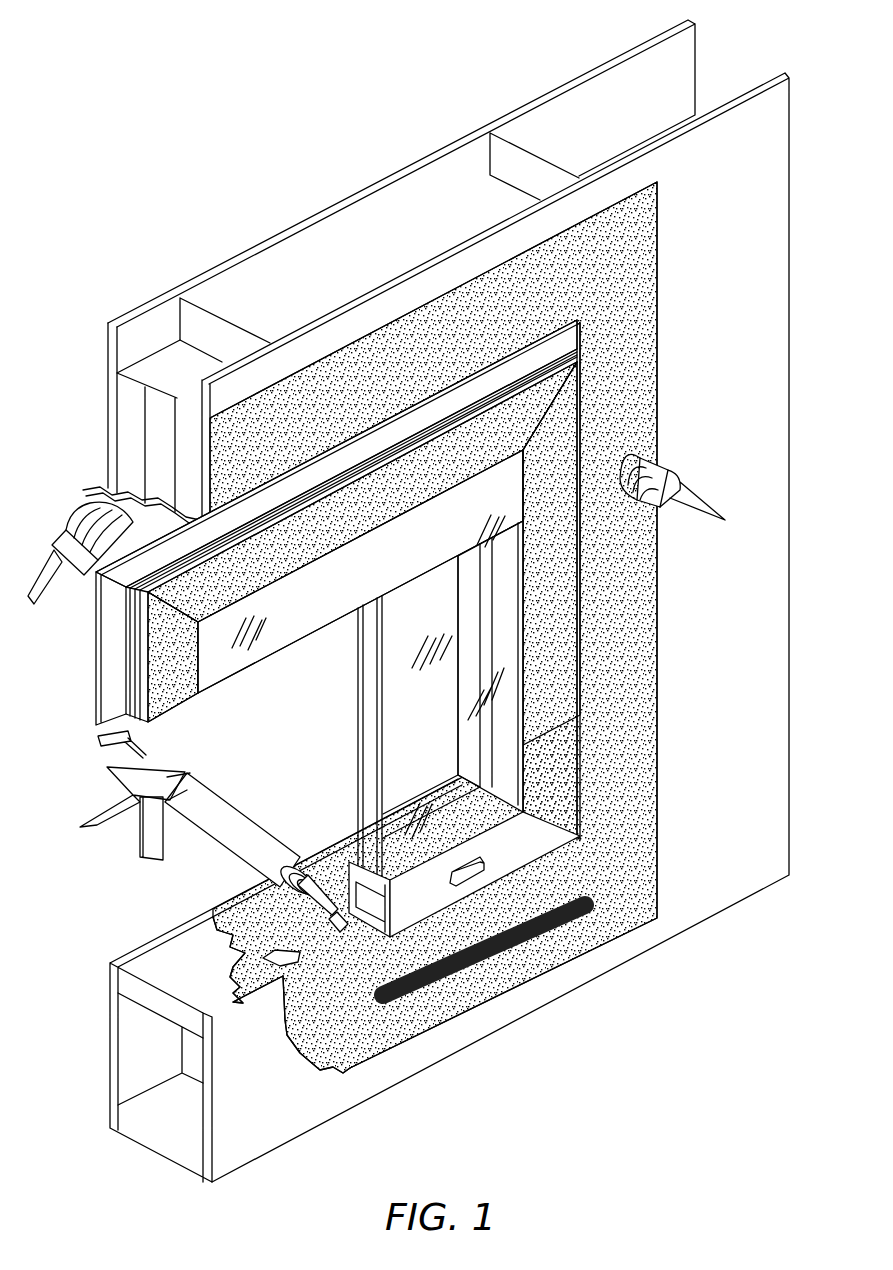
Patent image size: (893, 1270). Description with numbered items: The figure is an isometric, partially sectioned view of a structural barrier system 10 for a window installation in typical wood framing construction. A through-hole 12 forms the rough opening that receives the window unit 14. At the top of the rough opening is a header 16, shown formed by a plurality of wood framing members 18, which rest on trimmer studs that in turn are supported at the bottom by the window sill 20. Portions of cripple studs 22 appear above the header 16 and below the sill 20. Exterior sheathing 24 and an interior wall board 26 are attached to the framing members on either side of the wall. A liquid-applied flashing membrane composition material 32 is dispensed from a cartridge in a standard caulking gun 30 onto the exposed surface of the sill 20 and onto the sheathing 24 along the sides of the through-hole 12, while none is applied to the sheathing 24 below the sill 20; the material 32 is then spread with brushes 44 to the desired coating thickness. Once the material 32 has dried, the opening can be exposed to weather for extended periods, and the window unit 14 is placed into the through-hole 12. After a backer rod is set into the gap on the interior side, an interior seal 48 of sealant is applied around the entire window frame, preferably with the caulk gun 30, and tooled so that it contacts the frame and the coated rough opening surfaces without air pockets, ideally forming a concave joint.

The structural barrier system 10 is at (208, 228).
The through-hole 12 is at (57, 643).
The window unit 14 is at (93, 660).
The header 16 is at (155, 448).
The wood framing members 18 is at (128, 407).
The window sill 20 is at (168, 980).
The cripple studs 22 is at (500, 162).
The exterior sheathing 24 is at (765, 78).
The interior wall board 26 is at (645, 38).
The caulking gun 30 is at (88, 800).
The composition material 32 is at (628, 722).
The brushes 44 is at (48, 565).
The interior seal 48 is at (347, 934).